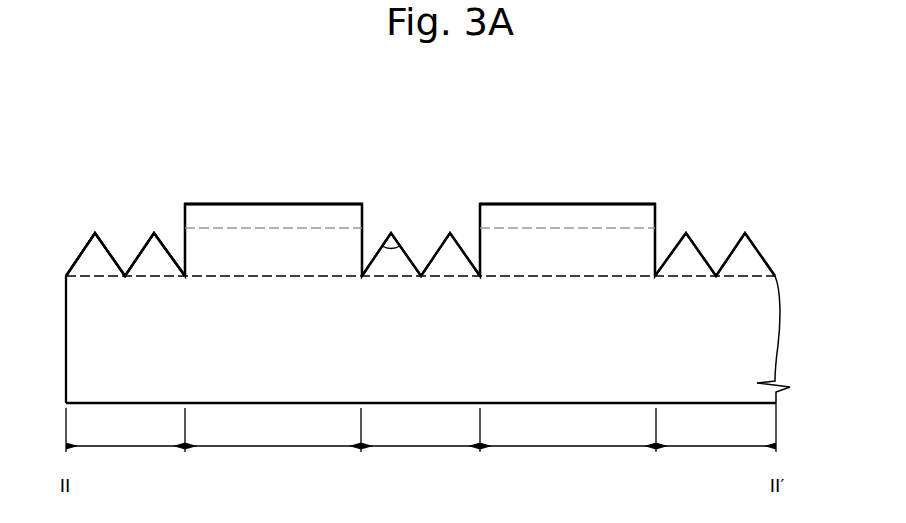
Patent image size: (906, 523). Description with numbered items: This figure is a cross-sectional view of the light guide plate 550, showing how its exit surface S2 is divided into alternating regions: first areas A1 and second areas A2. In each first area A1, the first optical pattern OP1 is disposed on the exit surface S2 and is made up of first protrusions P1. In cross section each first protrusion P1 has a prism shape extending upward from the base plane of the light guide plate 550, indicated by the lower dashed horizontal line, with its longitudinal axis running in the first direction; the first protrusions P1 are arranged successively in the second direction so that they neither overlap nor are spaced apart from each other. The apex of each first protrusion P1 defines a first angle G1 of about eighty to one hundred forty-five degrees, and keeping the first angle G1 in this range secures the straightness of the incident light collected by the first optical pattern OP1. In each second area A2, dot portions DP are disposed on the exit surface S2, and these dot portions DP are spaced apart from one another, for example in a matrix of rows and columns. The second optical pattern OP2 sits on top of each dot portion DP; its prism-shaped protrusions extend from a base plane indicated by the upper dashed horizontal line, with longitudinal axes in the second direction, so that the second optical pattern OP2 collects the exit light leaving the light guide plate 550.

The light guide plate 550 is at (611, 144).
The first optical pattern OP1 is at (155, 182).
The first protrusions P1 is at (95, 232).
The first angle G1 is at (389, 259).
The exit surface S2 is at (227, 204).
The second optical pattern OP2 is at (273, 215).
The dot portions DP is at (315, 240).
The first area A1 is at (421, 457).
The second area A2 is at (420, 457).